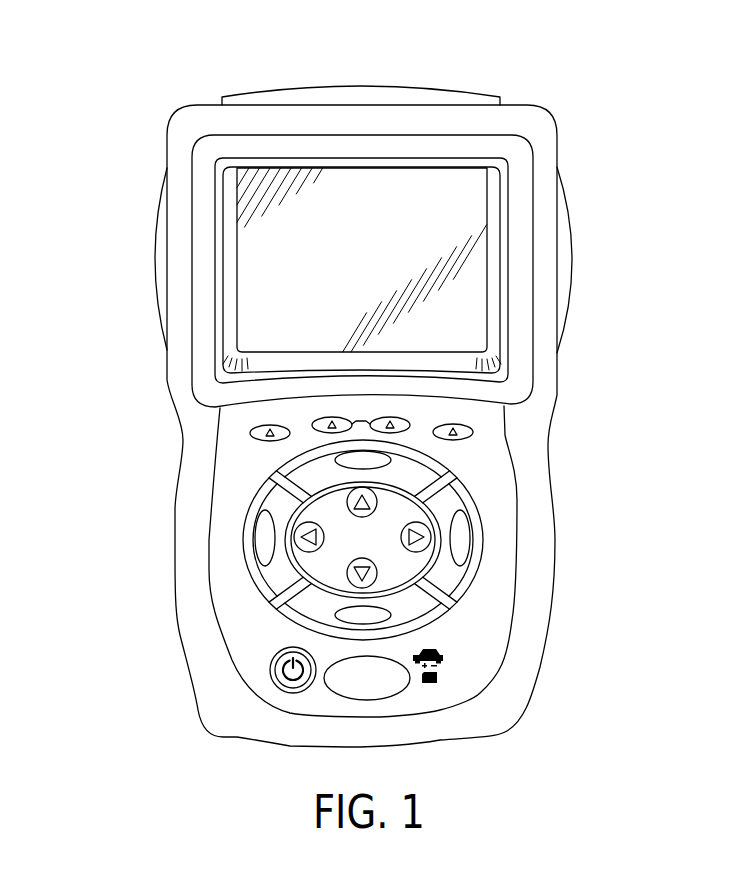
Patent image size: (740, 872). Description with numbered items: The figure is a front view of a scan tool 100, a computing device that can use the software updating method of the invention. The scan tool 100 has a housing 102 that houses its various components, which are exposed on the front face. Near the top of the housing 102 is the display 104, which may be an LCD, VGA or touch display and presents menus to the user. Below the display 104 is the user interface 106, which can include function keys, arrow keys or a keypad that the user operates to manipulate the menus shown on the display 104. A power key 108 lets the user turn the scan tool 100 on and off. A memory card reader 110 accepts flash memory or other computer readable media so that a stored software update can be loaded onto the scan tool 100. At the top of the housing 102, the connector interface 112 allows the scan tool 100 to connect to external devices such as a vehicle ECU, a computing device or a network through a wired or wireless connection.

The scan tool 100 is at (349, 376).
The housing 102 is at (545, 113).
The display 104 is at (470, 319).
The user interface 106 is at (448, 500).
The power key 108 is at (271, 669).
The memory card reader 110 is at (154, 251).
The connector interface 112 is at (357, 86).